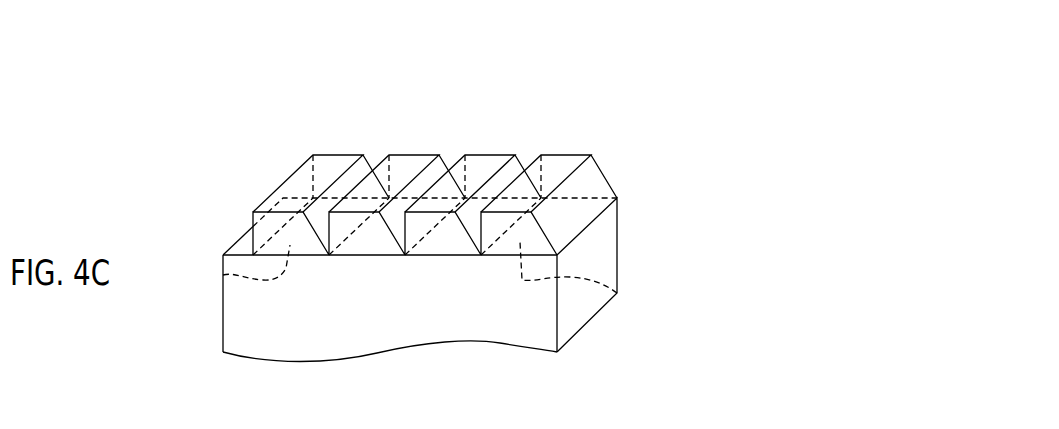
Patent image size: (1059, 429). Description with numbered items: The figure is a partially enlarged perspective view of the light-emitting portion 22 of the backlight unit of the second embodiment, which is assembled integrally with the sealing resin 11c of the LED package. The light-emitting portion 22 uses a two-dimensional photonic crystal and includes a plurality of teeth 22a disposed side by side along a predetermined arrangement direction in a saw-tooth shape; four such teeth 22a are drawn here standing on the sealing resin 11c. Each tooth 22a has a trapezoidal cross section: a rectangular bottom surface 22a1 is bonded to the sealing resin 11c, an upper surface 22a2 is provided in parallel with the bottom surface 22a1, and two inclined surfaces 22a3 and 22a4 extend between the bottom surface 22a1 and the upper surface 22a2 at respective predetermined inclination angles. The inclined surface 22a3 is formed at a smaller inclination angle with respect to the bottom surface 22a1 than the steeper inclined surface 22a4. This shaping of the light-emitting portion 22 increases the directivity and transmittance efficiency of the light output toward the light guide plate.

The sealing resin 11c is at (602, 250).
The light-emitting portion 22 is at (466, 135).
The tooth 22a is at (333, 157).
The bottom surface 22a1 is at (223, 275).
The upper surface 22a2 is at (298, 190).
The inclined surface 22a3 is at (371, 167).
The inclined surface 22a4 is at (250, 229).